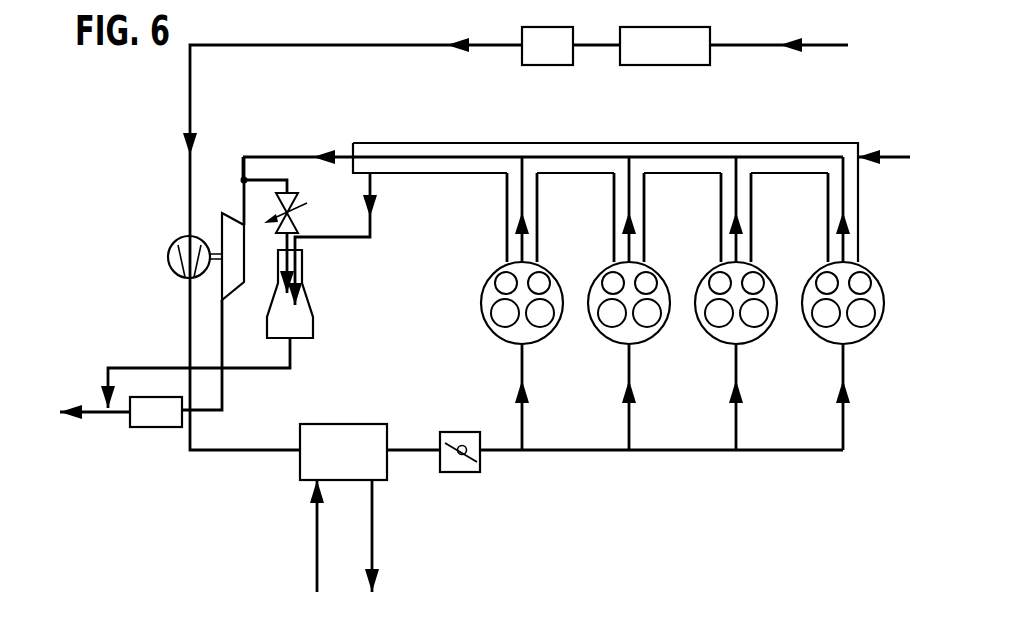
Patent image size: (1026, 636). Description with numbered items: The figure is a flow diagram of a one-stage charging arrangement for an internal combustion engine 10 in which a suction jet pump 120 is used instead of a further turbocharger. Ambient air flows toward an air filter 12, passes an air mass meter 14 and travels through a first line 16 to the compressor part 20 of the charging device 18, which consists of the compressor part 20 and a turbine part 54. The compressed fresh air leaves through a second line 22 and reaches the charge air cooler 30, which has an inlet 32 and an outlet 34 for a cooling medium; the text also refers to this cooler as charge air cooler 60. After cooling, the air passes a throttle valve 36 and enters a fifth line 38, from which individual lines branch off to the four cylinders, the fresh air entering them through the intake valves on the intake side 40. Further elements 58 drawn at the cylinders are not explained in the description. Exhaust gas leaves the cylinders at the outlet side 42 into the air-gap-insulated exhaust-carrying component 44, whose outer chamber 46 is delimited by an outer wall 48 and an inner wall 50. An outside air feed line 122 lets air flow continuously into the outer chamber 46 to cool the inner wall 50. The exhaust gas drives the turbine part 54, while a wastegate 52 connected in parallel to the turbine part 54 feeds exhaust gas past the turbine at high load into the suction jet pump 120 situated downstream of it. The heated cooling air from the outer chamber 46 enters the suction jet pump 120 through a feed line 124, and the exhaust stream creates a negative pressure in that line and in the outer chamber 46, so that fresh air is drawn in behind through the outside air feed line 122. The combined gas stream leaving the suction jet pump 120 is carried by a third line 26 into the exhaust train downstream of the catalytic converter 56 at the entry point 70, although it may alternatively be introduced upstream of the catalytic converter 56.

The internal combustion engine 10 is at (669, 336).
The air filter 12 is at (665, 55).
The air mass meter 14 is at (545, 55).
The first line 16 is at (290, 47).
The charging device 18 is at (205, 226).
The compressor part 20 is at (182, 246).
The second line 22 is at (184, 300).
The third line 26 is at (252, 370).
The charge air cooler 30 is at (345, 468).
The inlet 32 is at (316, 557).
The outlet 34 is at (373, 557).
The throttle valve 36 is at (462, 468).
The fifth line 38 is at (683, 454).
The intake side 40 is at (696, 401).
The outlet side 42 is at (488, 114).
The exhaust-carrying component 44 is at (792, 140).
The outer chamber 46 is at (730, 155).
The outer wall 48 is at (389, 143).
The inner wall 50 is at (585, 155).
The wastegate 52 is at (288, 192).
The turbine part 54 is at (232, 236).
The catalytic converter 56 is at (157, 430).
The exhaust valves 58 is at (506, 316).
The charge air cooler 60 is at (503, 280).
The entry point 70 is at (108, 426).
The suction jet pump 120 is at (301, 334).
The outside air feed line 122 is at (881, 157).
The feed line 124 is at (344, 240).